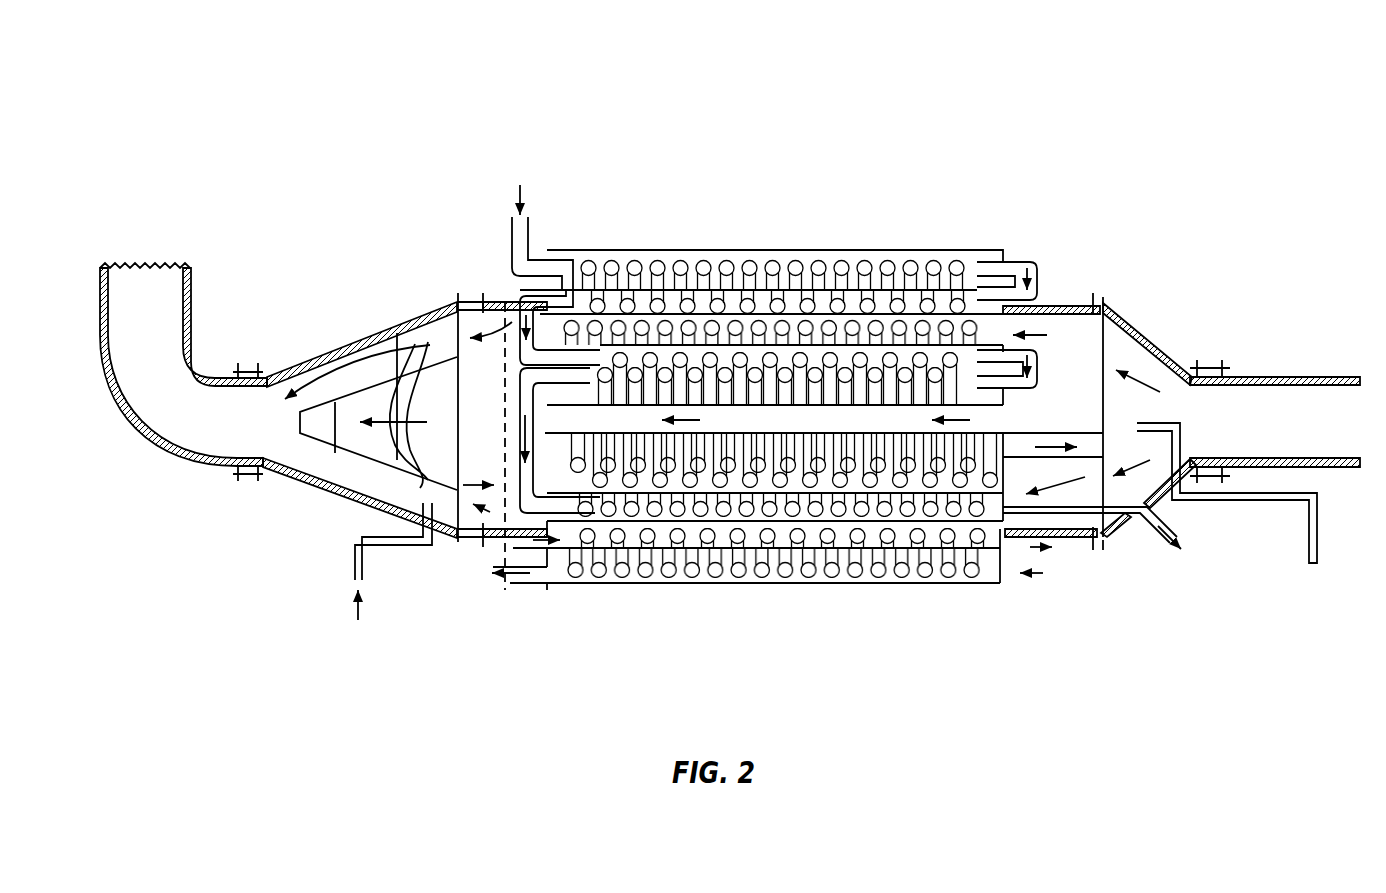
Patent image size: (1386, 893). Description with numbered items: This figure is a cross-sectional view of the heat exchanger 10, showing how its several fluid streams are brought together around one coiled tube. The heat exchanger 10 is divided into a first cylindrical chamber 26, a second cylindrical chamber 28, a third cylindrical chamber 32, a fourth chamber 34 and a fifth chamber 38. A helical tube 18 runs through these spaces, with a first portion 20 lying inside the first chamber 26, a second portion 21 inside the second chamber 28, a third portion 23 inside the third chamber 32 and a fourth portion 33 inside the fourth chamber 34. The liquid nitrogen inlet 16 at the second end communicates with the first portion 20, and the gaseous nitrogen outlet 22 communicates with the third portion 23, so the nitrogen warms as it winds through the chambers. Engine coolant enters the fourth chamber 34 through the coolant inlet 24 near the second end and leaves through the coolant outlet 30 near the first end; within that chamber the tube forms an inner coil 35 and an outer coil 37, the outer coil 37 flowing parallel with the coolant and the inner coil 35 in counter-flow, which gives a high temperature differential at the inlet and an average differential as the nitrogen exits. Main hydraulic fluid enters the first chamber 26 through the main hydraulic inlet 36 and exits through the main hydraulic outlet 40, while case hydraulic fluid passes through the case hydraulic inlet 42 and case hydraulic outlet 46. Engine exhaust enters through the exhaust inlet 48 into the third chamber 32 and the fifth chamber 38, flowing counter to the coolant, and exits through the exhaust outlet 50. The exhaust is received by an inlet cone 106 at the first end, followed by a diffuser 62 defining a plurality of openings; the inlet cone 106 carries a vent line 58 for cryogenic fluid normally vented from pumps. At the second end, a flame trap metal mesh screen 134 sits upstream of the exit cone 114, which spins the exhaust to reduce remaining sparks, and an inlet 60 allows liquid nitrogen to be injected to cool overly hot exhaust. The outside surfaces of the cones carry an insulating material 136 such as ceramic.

The heat exchanger 10 is at (708, 150).
The liquid nitrogen inlet 16 is at (512, 217).
The helical tube 18 is at (530, 243).
The first portion 20 is at (923, 263).
The second portion 21 is at (967, 283).
The gaseous nitrogen outlet 22 is at (1180, 547).
The third portion 23 is at (680, 530).
The coolant inlet 24 is at (473, 478).
The first cylindrical chamber 26 is at (603, 250).
The second cylindrical chamber 28 is at (668, 290).
The coolant outlet 30 is at (1030, 433).
The third cylindrical chamber 32 is at (705, 300).
The fourth portion 33 is at (600, 478).
The fourth chamber 34 is at (765, 345).
The inner coil 35 is at (620, 365).
The main hydraulic inlet 36 is at (1033, 582).
The outer coil 37 is at (607, 352).
The fifth chamber 38 is at (840, 400).
The main hydraulic outlet 40 is at (525, 583).
The case hydraulic inlet 42 is at (513, 548).
The case hydraulic outlet 46 is at (1033, 552).
The exhaust inlet 48 is at (1273, 377).
The exhaust outlet 50 is at (155, 263).
The vent line 58 is at (1317, 530).
The liquid nitrogen injection inlet 60 is at (353, 567).
The diffuser 62 is at (1106, 310).
The inlet cone 106 is at (1182, 383).
The exit cone 114 is at (310, 477).
The flame trap metal mesh screen 134 is at (503, 383).
The insulating material 136 is at (377, 330).